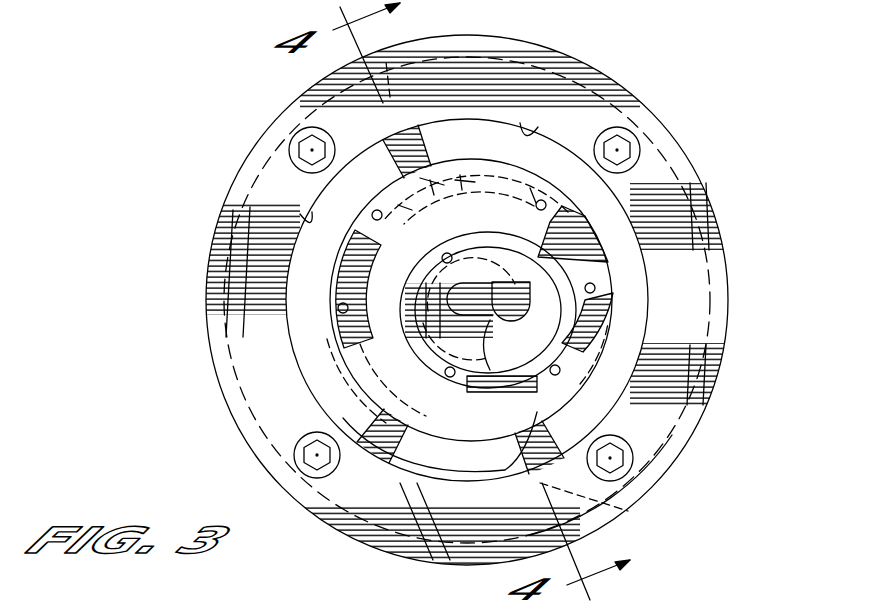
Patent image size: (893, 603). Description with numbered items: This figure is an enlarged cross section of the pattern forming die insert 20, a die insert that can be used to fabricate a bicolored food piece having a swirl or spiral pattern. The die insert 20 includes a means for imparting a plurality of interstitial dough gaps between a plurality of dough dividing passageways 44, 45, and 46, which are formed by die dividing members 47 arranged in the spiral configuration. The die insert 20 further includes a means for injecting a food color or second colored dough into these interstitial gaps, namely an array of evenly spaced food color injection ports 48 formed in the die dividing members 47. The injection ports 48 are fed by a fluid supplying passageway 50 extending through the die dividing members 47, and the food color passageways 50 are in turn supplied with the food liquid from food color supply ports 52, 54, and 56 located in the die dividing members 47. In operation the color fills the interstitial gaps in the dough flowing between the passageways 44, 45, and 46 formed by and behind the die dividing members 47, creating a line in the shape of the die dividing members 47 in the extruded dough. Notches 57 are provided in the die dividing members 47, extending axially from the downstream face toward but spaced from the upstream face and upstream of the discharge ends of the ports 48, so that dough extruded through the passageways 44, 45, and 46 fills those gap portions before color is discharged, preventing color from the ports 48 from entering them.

The pattern forming die insert 20 is at (707, 192).
The dough dividing passageway 44 is at (537, 133).
The dough dividing passageway 45 is at (305, 222).
The dough dividing passageway 46 is at (398, 466).
The die dividing member 47 is at (603, 270).
The food color injection port 48 is at (538, 208).
The fluid supplying passageway 50 is at (503, 167).
The food color supply port 52 is at (452, 512).
The food color supply port 54 is at (398, 135).
The food color supply port 56 is at (628, 511).
The notch 57 is at (434, 130).